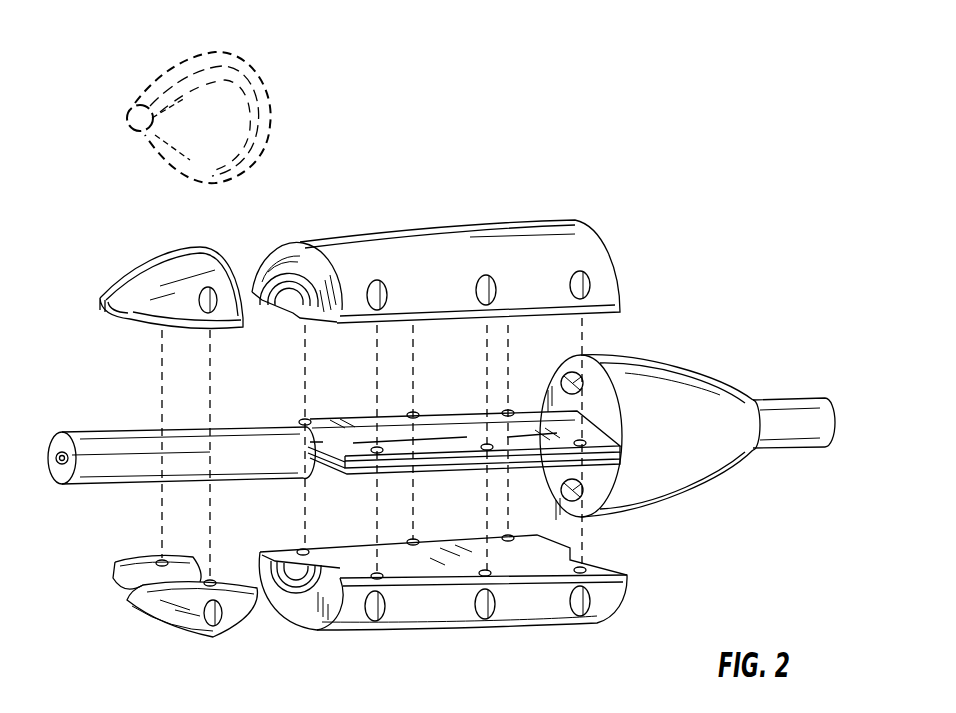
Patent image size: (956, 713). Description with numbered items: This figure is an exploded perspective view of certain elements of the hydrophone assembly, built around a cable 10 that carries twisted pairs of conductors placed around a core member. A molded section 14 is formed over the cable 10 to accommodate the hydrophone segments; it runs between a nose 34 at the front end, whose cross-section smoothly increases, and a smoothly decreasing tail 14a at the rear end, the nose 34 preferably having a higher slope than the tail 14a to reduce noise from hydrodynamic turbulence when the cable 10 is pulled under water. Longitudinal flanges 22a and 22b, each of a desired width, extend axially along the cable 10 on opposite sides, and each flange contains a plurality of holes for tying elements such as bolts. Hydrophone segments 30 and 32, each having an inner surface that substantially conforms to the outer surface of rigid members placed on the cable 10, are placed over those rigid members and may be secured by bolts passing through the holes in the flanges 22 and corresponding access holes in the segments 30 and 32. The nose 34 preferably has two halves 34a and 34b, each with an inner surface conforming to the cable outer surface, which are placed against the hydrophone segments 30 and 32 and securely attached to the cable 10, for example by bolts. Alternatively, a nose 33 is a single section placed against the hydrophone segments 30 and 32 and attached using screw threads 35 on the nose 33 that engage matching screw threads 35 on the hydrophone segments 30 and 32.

The cable 10 is at (125, 432).
The molded section 14 is at (685, 370).
The tail 14a is at (693, 492).
The flanges 22 is at (362, 383).
The longitudinal flange 22a is at (340, 416).
The longitudinal flange 22b is at (362, 477).
The hydrophone segment 30 is at (433, 223).
The hydrophone segment 32 is at (427, 635).
The nose 33 is at (147, 62).
The nose 34 is at (213, 653).
The nose half 34a is at (140, 272).
The nose half 34b is at (170, 632).
The screw threads 35 is at (245, 73).